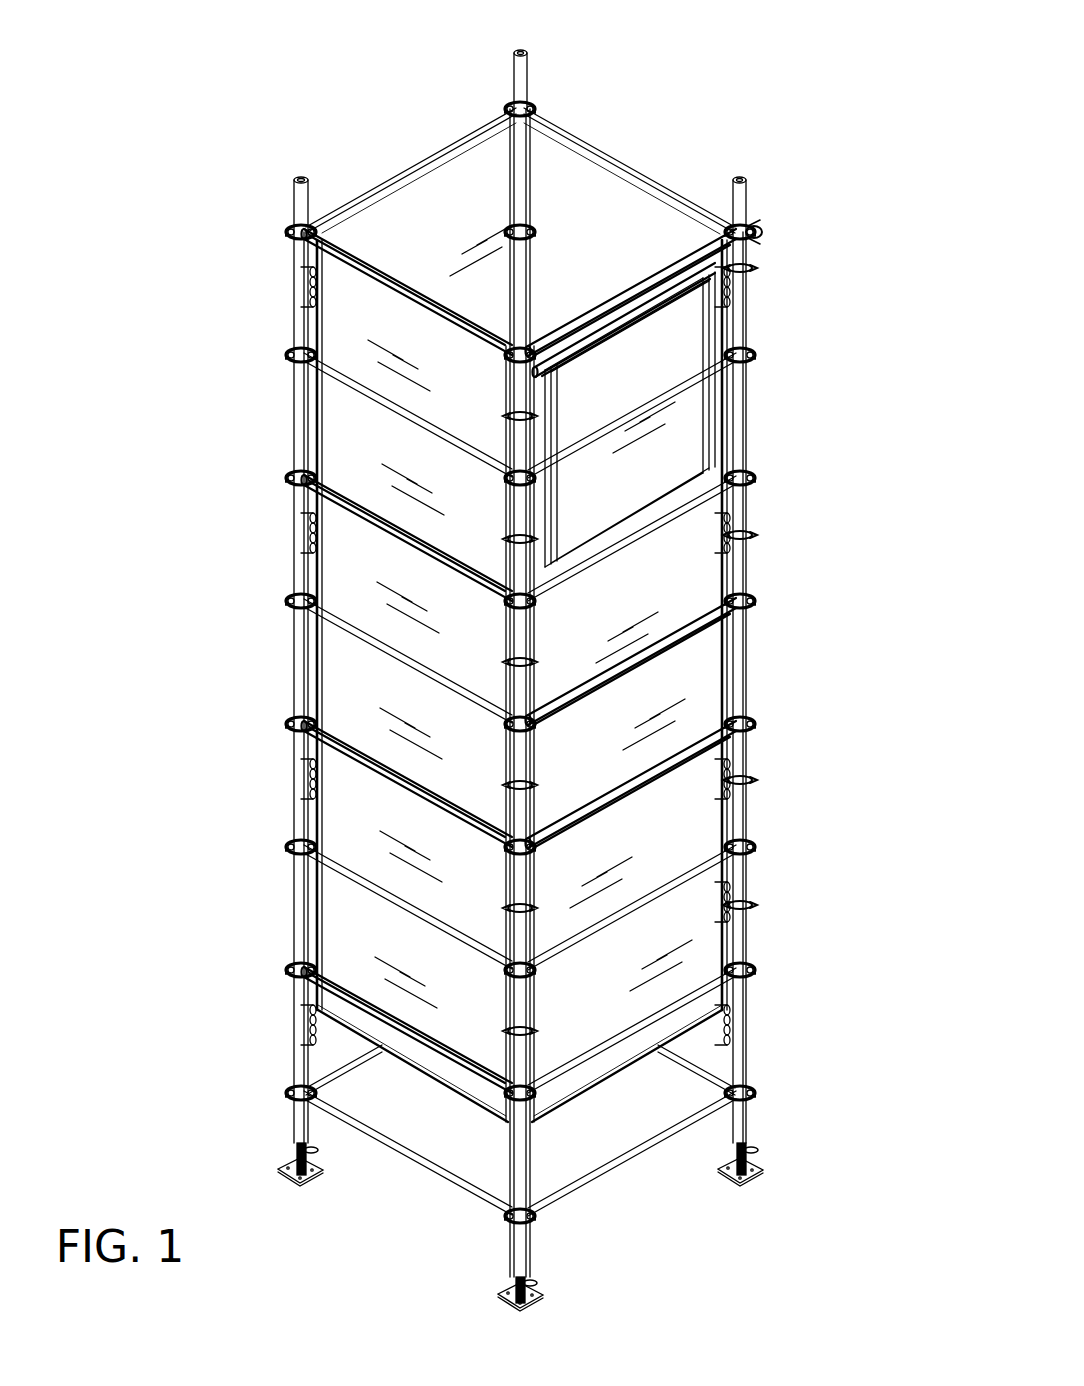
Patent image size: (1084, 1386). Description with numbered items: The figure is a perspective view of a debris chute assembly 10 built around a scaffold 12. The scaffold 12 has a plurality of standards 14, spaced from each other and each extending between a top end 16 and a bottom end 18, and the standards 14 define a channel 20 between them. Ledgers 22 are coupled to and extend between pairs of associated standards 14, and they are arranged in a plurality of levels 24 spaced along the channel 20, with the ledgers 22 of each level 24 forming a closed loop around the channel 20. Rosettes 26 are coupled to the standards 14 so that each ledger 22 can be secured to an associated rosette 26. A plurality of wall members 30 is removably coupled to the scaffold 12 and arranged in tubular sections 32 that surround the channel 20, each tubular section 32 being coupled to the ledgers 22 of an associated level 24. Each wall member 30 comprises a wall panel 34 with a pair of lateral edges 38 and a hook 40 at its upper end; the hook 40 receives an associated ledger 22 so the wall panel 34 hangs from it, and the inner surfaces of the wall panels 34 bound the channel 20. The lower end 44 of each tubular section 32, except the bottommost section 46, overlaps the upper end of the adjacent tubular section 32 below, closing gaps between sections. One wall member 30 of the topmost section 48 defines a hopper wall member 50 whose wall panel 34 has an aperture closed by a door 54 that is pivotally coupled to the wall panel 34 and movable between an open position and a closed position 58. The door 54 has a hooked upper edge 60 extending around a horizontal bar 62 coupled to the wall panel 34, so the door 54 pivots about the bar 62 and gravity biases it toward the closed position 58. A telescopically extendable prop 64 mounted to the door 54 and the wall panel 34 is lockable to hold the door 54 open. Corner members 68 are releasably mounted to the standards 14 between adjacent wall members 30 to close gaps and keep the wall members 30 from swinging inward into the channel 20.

The debris chute assembly 10 is at (504, 662).
The scaffold 12 is at (750, 1205).
The standard 14 is at (298, 182).
The top end 16 is at (296, 182).
The bottom end 18 is at (297, 1143).
The channel 20 is at (441, 214).
The ledger 22 is at (372, 405).
The level 24 is at (301, 655).
The rosette 26 is at (290, 232).
The wall member 30 is at (405, 150).
The tubular section 32 is at (780, 245).
The wall panel 34 is at (313, 400).
The lateral edge 38 is at (746, 888).
The hook 40 is at (385, 288).
The lower end 44 is at (632, 1062).
The bottommost section 46 is at (252, 959).
The topmost section 48 is at (273, 265).
The hopper wall member 50 is at (753, 287).
The door 54 is at (705, 322).
The closed position 58 is at (632, 538).
The hooked upper edge 60 is at (750, 228).
The bar 62 is at (754, 268).
The prop 64 is at (712, 407).
The corner member 68 is at (498, 165).